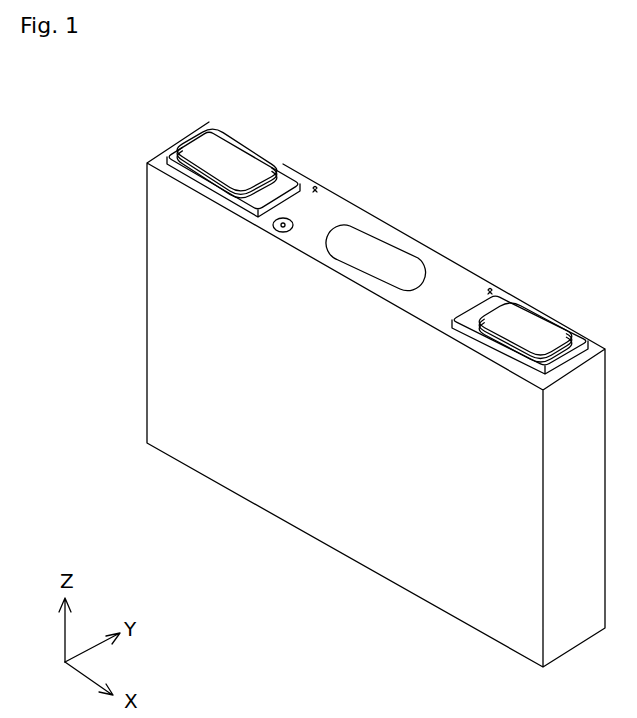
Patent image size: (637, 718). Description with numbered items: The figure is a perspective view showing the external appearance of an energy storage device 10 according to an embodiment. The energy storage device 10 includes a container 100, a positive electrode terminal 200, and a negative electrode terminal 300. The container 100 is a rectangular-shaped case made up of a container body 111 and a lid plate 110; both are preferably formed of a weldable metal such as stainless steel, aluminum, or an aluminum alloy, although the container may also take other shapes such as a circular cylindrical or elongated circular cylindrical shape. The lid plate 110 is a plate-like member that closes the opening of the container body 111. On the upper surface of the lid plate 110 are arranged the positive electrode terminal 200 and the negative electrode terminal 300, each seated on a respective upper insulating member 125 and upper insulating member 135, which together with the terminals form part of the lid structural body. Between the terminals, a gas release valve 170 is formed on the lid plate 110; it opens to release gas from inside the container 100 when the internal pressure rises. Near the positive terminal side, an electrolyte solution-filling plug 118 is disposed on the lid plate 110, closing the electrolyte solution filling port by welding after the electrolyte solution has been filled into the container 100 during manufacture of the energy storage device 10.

The energy storage device 10 is at (539, 117).
The container 100 is at (80, 217).
The lid plate 110 is at (272, 226).
The container body 111 is at (176, 280).
The electrolyte solution-filling plug 118 is at (294, 220).
The upper insulating member 125 is at (287, 178).
The upper insulating member 135 is at (498, 298).
The gas release valve 170 is at (380, 258).
The positive electrode terminal 200 is at (237, 148).
The negative electrode terminal 300 is at (528, 323).